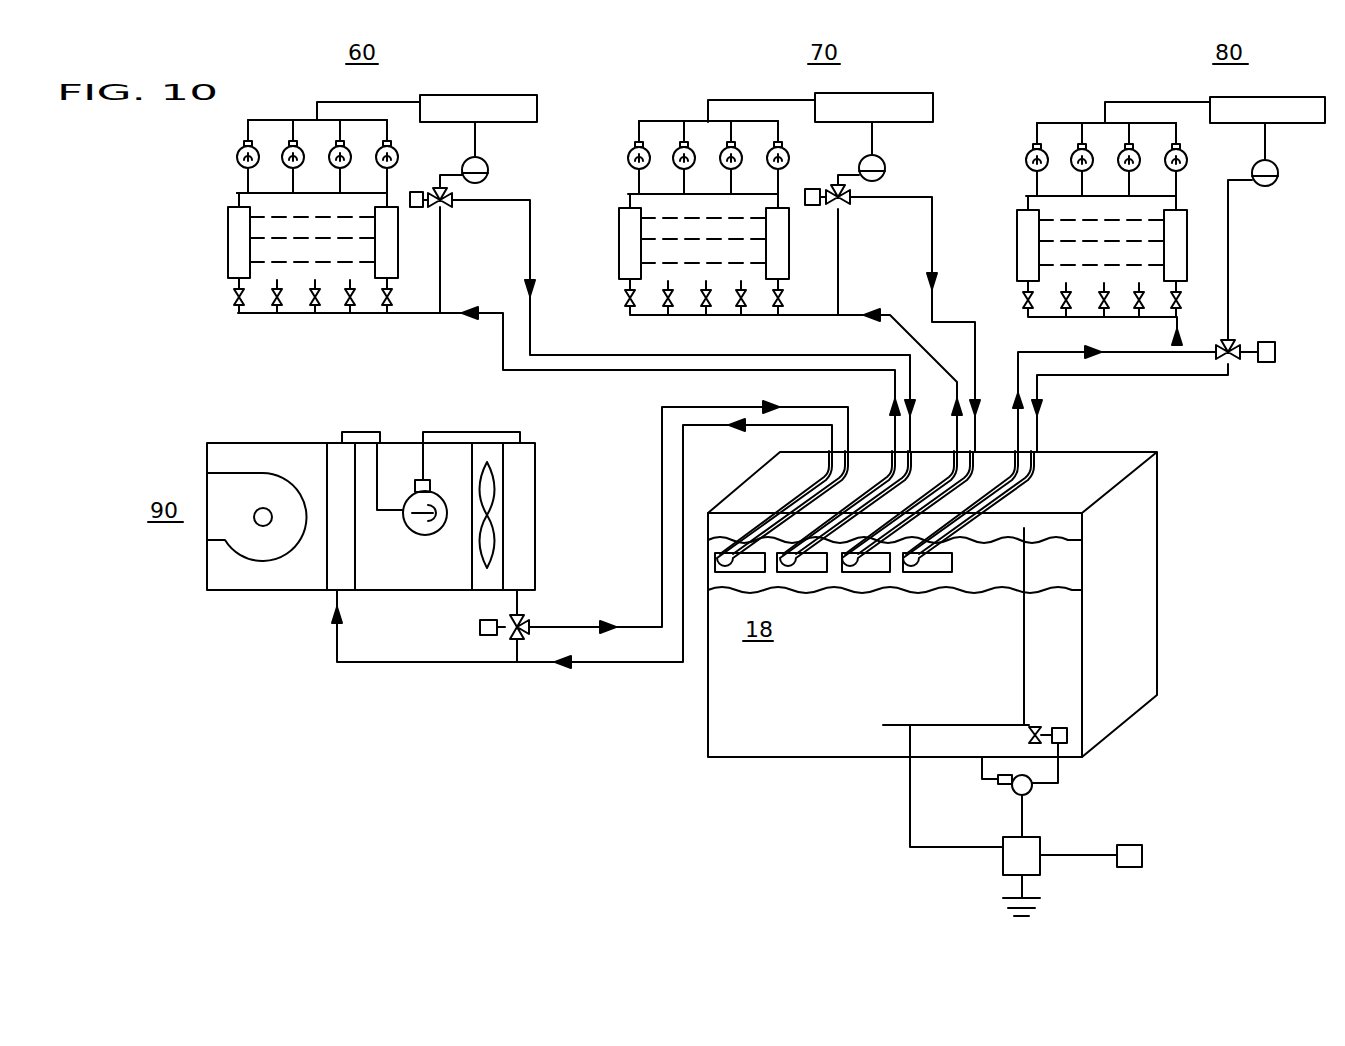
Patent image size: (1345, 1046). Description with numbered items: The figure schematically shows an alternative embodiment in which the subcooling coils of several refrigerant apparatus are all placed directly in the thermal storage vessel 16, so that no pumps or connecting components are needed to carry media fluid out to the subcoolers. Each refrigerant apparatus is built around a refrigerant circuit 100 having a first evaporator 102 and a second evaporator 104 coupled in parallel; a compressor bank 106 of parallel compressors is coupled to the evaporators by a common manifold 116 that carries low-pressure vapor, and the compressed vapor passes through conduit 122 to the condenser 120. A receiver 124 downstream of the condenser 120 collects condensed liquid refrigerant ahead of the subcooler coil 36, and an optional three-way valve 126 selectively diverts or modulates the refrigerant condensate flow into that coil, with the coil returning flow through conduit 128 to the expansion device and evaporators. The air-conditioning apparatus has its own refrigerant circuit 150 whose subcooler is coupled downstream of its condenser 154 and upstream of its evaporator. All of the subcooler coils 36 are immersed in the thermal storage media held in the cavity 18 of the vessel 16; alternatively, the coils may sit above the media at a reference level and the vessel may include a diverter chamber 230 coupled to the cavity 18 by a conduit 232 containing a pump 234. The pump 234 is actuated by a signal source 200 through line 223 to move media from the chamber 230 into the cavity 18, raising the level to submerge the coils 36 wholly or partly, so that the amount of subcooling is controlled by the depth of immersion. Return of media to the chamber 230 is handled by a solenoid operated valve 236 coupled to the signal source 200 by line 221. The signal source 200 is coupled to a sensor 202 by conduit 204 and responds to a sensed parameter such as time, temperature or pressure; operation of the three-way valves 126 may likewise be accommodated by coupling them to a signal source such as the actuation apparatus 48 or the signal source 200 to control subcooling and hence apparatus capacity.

The thermal storage vessel 16 is at (968, 582).
The cavity 18 is at (895, 565).
The subcooler coil 36 is at (1044, 470).
The actuation apparatus 48 is at (412, 192).
The refrigerant circuit 100 is at (226, 238).
The first evaporator 102 is at (228, 250).
The second evaporator 104 is at (398, 256).
The compressor bank 106 is at (234, 159).
The manifold 116 is at (237, 195).
The condenser 120 is at (530, 95).
The conduit 122 is at (390, 102).
The receiver 124 is at (488, 168).
The three-way valve 126 is at (447, 207).
The conduit 128 is at (623, 370).
The refrigerant circuit 150 is at (298, 567).
The condenser 154 is at (520, 510).
The signal source 200 is at (1045, 862).
The sensor 202 is at (1142, 858).
The conduit 204 is at (1085, 855).
The line 221 is at (910, 798).
The line 223 is at (1023, 815).
The diverter chamber 230 is at (1050, 655).
The conduit 232 is at (1000, 785).
The pump 234 is at (1032, 790).
The solenoid operated valve 236 is at (1028, 733).